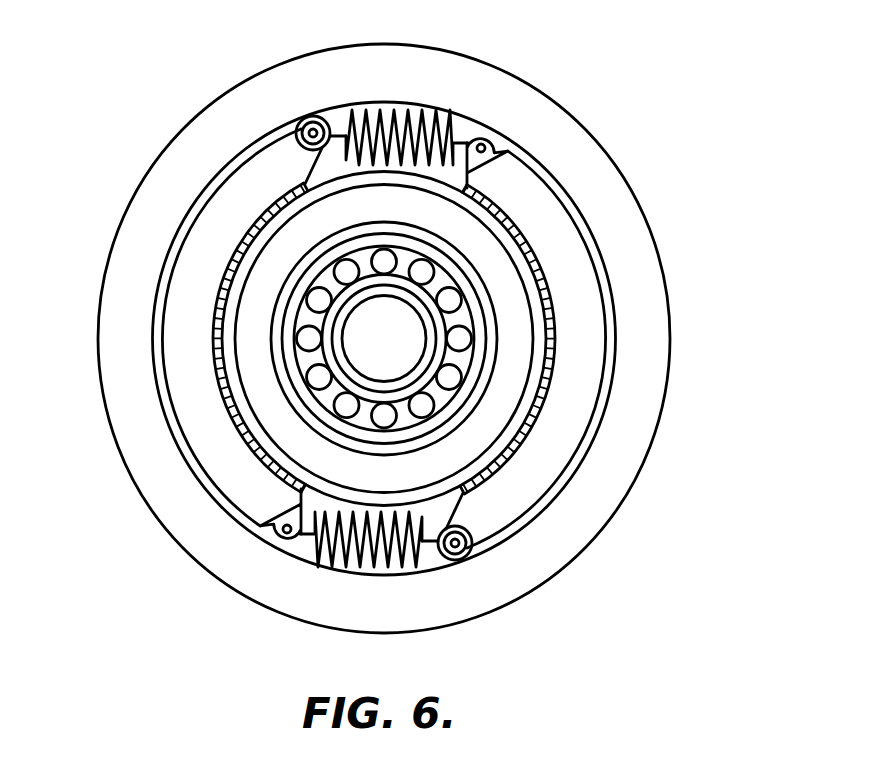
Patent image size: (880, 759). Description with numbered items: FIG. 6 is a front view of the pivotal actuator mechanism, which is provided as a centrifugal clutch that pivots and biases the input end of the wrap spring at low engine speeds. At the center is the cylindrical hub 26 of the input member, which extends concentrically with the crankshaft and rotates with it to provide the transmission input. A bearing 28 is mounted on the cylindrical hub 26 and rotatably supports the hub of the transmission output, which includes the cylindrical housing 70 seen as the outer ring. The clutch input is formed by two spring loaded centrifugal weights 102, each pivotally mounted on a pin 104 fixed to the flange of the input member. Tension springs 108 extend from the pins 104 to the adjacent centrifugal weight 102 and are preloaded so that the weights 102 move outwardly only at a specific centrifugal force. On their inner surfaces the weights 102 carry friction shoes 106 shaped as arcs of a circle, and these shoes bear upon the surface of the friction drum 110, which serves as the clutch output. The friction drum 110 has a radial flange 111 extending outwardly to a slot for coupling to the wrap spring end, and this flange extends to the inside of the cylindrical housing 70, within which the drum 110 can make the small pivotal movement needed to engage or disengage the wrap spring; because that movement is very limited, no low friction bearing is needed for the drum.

The cylindrical housing 70 is at (572, 108).
The radial flange 111 is at (390, 100).
The spring loaded centrifugal weights 102 is at (235, 163).
The pins 104 is at (313, 128).
The tension springs 108 is at (457, 130).
The friction shoes 106 is at (227, 263).
The friction drum 110 is at (548, 378).
The bearing 28 is at (361, 440).
The cylindrical hub 26 is at (342, 345).